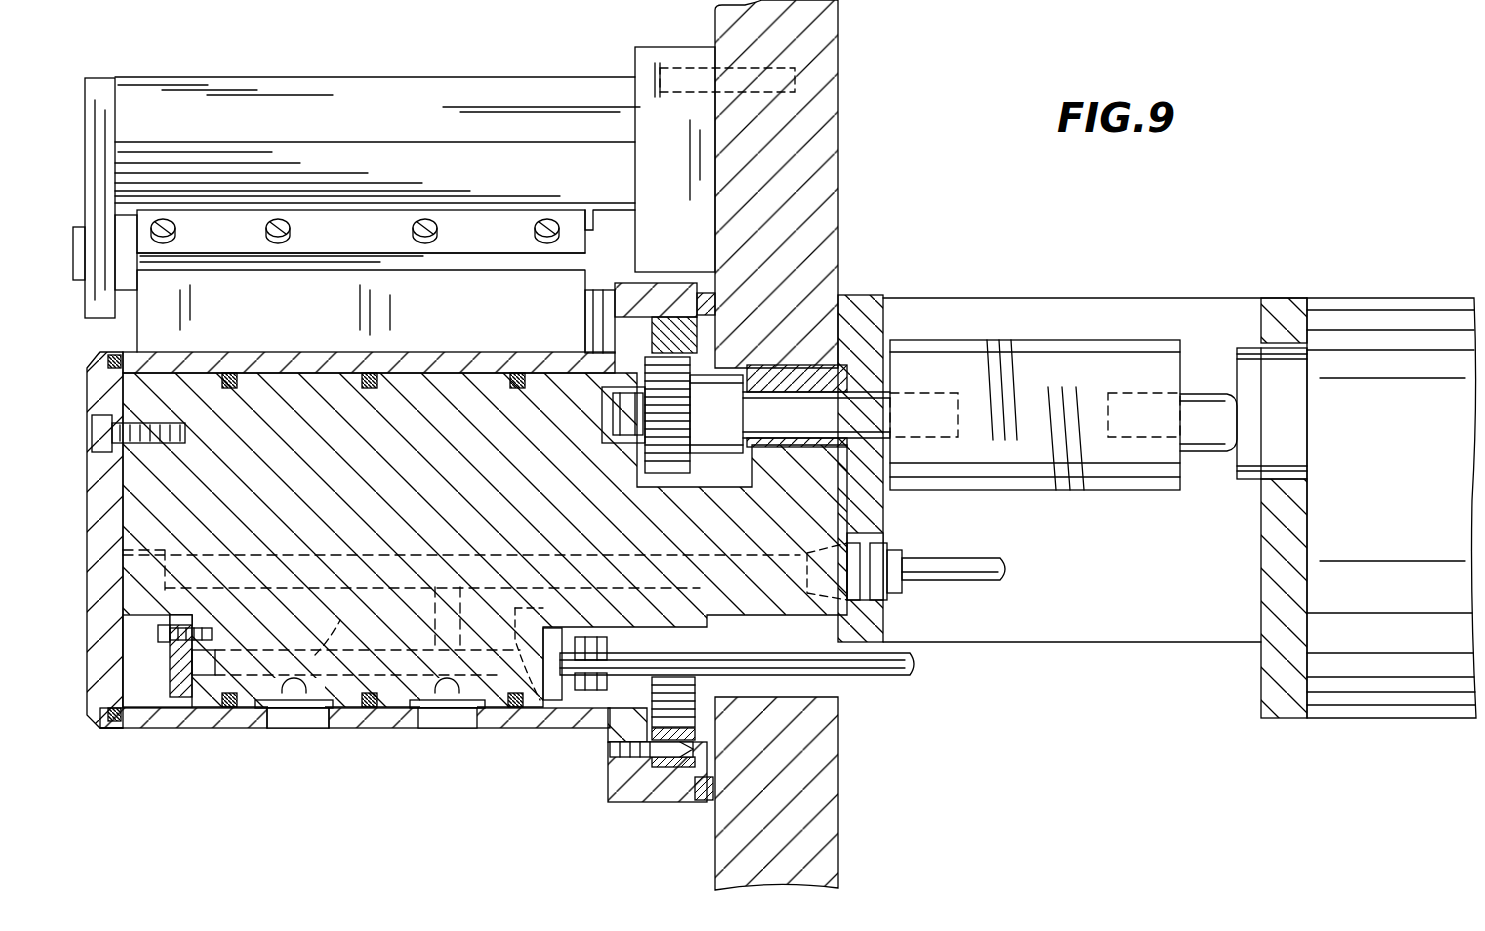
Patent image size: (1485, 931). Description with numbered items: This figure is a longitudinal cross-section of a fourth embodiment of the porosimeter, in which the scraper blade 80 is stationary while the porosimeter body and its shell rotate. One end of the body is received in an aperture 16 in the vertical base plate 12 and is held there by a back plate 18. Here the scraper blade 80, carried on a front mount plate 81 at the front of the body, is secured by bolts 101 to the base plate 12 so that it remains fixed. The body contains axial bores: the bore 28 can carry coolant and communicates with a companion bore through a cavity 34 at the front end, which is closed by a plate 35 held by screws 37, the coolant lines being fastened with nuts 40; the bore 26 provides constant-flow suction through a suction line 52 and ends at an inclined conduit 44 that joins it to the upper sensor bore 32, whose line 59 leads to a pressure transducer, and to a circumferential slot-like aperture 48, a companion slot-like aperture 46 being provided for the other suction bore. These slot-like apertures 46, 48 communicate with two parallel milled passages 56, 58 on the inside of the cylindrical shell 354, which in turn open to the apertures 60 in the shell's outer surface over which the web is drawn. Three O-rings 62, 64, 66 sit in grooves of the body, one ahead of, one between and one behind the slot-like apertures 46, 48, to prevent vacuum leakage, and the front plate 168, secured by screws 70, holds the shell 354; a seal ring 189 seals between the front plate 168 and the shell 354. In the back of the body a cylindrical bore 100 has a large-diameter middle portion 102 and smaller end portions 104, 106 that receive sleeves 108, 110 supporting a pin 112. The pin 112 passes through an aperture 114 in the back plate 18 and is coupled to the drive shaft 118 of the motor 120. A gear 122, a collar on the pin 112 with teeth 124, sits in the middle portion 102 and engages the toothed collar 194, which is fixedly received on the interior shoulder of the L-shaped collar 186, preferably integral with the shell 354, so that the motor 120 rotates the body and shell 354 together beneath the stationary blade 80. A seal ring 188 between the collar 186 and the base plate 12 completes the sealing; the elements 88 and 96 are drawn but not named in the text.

The base plate 12 is at (832, 150).
The aperture 16 is at (826, 695).
The back plate 18 is at (866, 297).
The cylindrical bore 26 is at (518, 702).
The cylindrical bore 28 is at (315, 655).
The cylindrical bore 32 is at (830, 525).
The cavity 34 is at (203, 668).
The plate 35 is at (170, 683).
The screws 37 is at (162, 634).
The nuts 40 is at (583, 648).
The inclined conduit 44 is at (435, 612).
The slot-like aperture 46 is at (294, 695).
The slot-like aperture 48 is at (448, 695).
The suction line 52 is at (906, 672).
The milled passage 56 is at (287, 702).
The milled passage 58 is at (416, 712).
The line 59 is at (983, 580).
The apertures 60 is at (268, 720).
The O-ring 62 is at (228, 708).
The O-ring 64 is at (374, 708).
The O-ring 66 is at (514, 704).
The screws 70 is at (90, 440).
The scraper blade 80 is at (480, 287).
The front mount plate 81 is at (102, 85).
The support block 88 is at (650, 178).
The screw 96 is at (616, 750).
The cylindrical bore 100 is at (745, 493).
The bolts 101 is at (650, 72).
The middle portion 102 is at (606, 385).
The end portion 104 is at (698, 415).
The end portion 106 is at (818, 415).
The sleeve 108 is at (602, 348).
The sleeve 110 is at (814, 442).
The pin 112 is at (886, 415).
The aperture 114 is at (884, 442).
The drive shaft 118 is at (1208, 432).
The motor 120 is at (1354, 318).
The gear 122 is at (721, 414).
The teeth 124 is at (672, 430).
The front plate 168 is at (92, 705).
The collar 186 is at (632, 790).
The seal ring 188 is at (704, 786).
The seal ring 189 is at (120, 725).
The toothed collar 194 is at (676, 337).
The cylindrical shell 354 is at (358, 730).